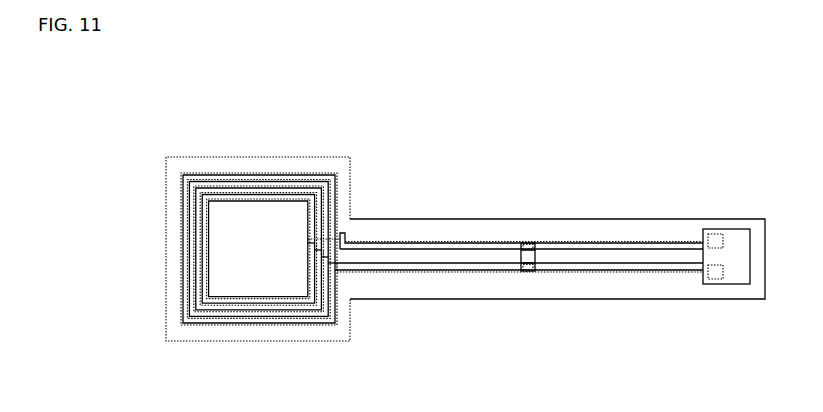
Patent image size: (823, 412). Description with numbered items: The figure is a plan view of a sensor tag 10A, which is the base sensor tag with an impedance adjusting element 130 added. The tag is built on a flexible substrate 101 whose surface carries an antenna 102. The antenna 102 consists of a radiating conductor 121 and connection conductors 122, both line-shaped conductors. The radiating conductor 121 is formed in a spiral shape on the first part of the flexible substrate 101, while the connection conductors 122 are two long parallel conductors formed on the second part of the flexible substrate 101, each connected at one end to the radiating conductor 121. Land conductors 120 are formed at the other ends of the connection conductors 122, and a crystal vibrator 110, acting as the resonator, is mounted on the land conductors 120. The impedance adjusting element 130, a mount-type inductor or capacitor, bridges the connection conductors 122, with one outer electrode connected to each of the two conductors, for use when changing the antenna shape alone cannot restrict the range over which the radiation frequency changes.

The sensor tag 10A is at (653, 136).
The flexible substrate 101 is at (618, 228).
The antenna 102 is at (410, 341).
The crystal vibrator 110 is at (739, 230).
The land conductors 120 is at (713, 280).
The radiating conductor 121 is at (337, 322).
The connection conductors 122 is at (460, 249).
The impedance adjusting element 130 is at (528, 243).